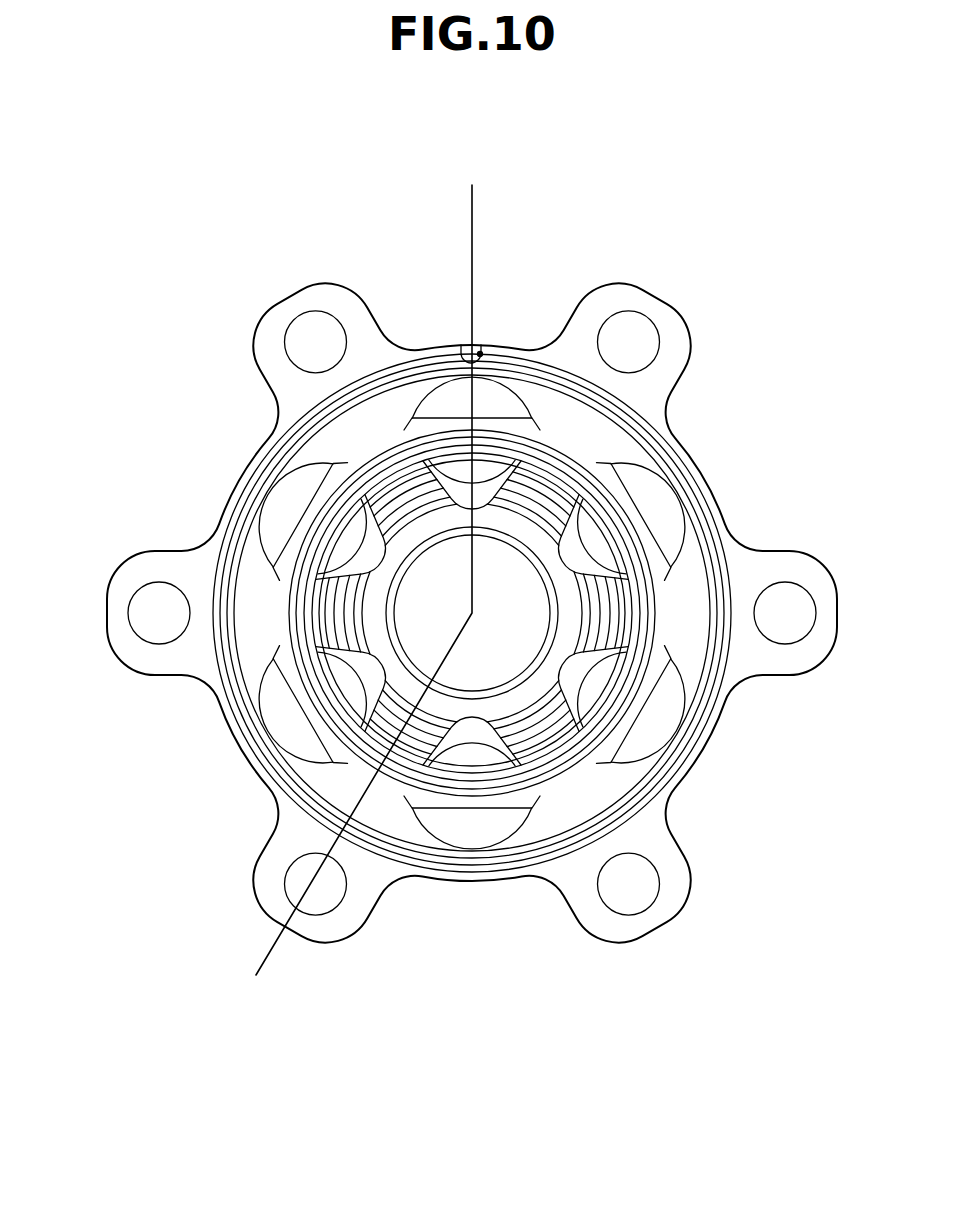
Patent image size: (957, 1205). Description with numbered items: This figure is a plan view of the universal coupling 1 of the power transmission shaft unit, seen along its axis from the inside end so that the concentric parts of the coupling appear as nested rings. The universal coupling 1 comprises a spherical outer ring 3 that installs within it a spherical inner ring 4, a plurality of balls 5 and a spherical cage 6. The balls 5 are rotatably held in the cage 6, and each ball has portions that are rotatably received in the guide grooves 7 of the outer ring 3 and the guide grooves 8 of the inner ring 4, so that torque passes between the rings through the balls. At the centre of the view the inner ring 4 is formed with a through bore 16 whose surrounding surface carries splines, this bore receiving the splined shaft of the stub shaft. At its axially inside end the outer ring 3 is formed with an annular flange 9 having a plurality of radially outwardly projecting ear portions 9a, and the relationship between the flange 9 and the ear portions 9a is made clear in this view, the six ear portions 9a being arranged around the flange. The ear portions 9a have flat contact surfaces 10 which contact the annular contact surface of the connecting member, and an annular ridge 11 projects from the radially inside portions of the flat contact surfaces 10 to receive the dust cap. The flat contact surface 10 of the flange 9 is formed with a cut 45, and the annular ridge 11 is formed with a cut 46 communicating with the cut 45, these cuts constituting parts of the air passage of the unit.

The universal coupling 1 is at (255, 307).
The spherical outer ring 3 is at (760, 667).
The spherical inner ring 4 is at (541, 741).
The balls 5 is at (464, 386).
The spherical cage 6 is at (628, 483).
The guide grooves 7 is at (448, 398).
The guide grooves 8 is at (383, 560).
The annular flange 9 is at (508, 343).
The ear portions 9a is at (343, 287).
The flat contact surfaces 10 is at (594, 322).
The annular ridge 11 is at (541, 370).
The through bore 16 is at (540, 717).
The cut 45 is at (479, 350).
The cut 46 is at (482, 356).